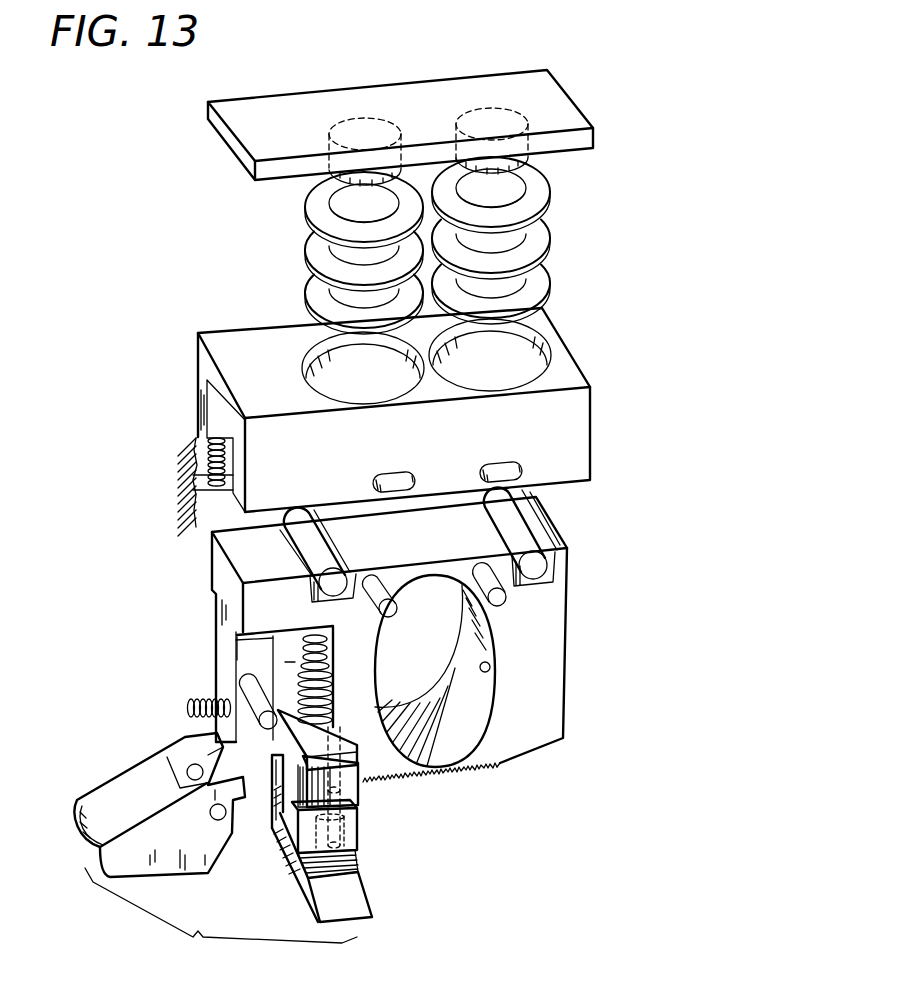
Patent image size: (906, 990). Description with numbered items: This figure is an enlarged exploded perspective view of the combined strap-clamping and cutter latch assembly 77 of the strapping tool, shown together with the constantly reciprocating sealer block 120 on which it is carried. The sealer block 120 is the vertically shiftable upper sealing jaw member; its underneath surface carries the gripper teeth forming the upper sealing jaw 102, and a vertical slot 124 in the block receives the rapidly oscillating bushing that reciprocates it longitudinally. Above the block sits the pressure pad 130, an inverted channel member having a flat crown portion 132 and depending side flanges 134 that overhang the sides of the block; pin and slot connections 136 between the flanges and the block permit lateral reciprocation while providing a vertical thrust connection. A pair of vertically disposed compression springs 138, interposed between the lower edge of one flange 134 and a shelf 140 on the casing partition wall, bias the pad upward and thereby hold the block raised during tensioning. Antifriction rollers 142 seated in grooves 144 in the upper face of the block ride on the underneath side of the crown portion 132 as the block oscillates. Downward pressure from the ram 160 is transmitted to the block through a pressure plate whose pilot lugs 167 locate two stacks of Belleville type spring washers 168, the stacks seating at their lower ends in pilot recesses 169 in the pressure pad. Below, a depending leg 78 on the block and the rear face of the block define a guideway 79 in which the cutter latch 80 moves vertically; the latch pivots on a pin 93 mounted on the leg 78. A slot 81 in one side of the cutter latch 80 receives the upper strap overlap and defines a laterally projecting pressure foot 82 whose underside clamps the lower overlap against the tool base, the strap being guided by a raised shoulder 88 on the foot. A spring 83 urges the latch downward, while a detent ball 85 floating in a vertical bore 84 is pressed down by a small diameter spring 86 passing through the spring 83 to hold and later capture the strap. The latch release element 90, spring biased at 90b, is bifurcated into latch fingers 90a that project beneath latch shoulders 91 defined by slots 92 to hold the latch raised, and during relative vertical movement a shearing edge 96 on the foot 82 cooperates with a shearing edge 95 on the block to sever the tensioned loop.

The ram 160 is at (413, 88).
The pilot lugs 167 is at (527, 157).
The Belleville type spring washers 168 is at (305, 217).
The pilot recesses 169 is at (540, 333).
The crown portion 132 is at (248, 352).
The pressure pad 130 is at (386, 416).
The side flanges 134 is at (207, 396).
The pin and slot connections 136 is at (502, 482).
The compression springs 138 is at (210, 447).
The shelf 140 is at (200, 483).
The sealer block 120 is at (385, 667).
The antifriction rollers 142 is at (307, 540).
The grooves 144 is at (346, 560).
The vertical slot 124 is at (493, 672).
The upper sealing jaw 102 is at (463, 770).
The spring 83 is at (300, 680).
The pin 93 is at (243, 692).
The latch shoulders 91 is at (290, 745).
The shearing edge 95 is at (312, 730).
The small diameter spring 86 is at (226, 645).
The depending leg 78 is at (220, 643).
The guideway 79 is at (278, 667).
The latch release element 90 is at (190, 842).
The latch fingers 90a is at (217, 737).
The spring bias 90b is at (187, 704).
The cutter latch 80 is at (334, 838).
The slot 81 is at (273, 838).
The pressure foot 82 is at (290, 860).
The raised shoulder 88 is at (300, 877).
The vertical bore 84 is at (337, 783).
The slots 92 is at (340, 792).
The detent ball 85 is at (350, 837).
The shearing edge 96 is at (350, 862).
The combined strap-clamping and cutter latch assembly 77 is at (221, 917).